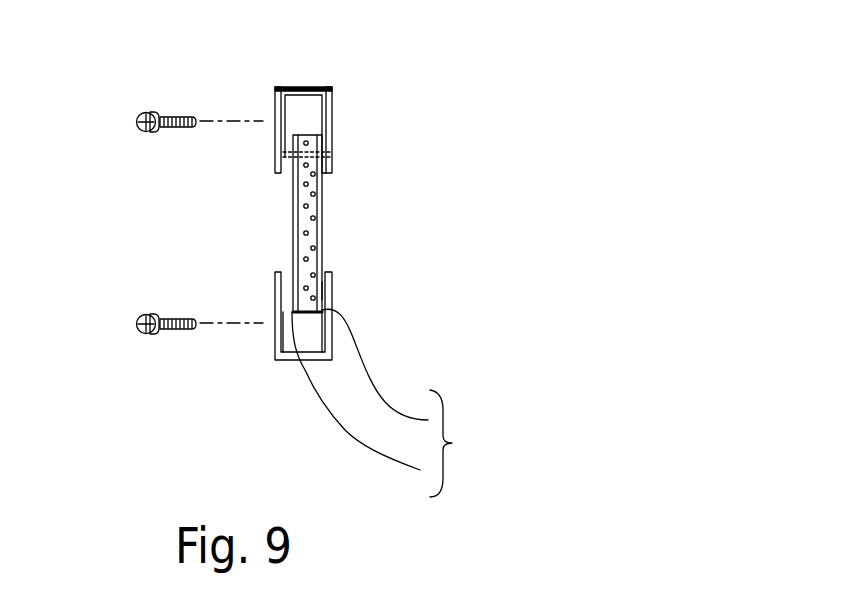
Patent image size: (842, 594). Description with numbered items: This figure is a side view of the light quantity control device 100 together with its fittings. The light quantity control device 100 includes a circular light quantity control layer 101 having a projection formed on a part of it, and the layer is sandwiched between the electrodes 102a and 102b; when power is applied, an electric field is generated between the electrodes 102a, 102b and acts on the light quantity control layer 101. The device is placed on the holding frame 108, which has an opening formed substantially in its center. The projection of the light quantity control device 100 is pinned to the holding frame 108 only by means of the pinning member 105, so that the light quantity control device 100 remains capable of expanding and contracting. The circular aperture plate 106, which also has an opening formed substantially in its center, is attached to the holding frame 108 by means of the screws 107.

The light quantity control device 100 is at (286, 222).
The light quantity control layer 101 is at (304, 133).
The electrode 102a is at (294, 294).
The electrode 102b is at (326, 290).
The pinning member 105 is at (292, 152).
The aperture plate 106 is at (276, 87).
The screws 107 is at (140, 112).
The holding frame 108 is at (333, 277).